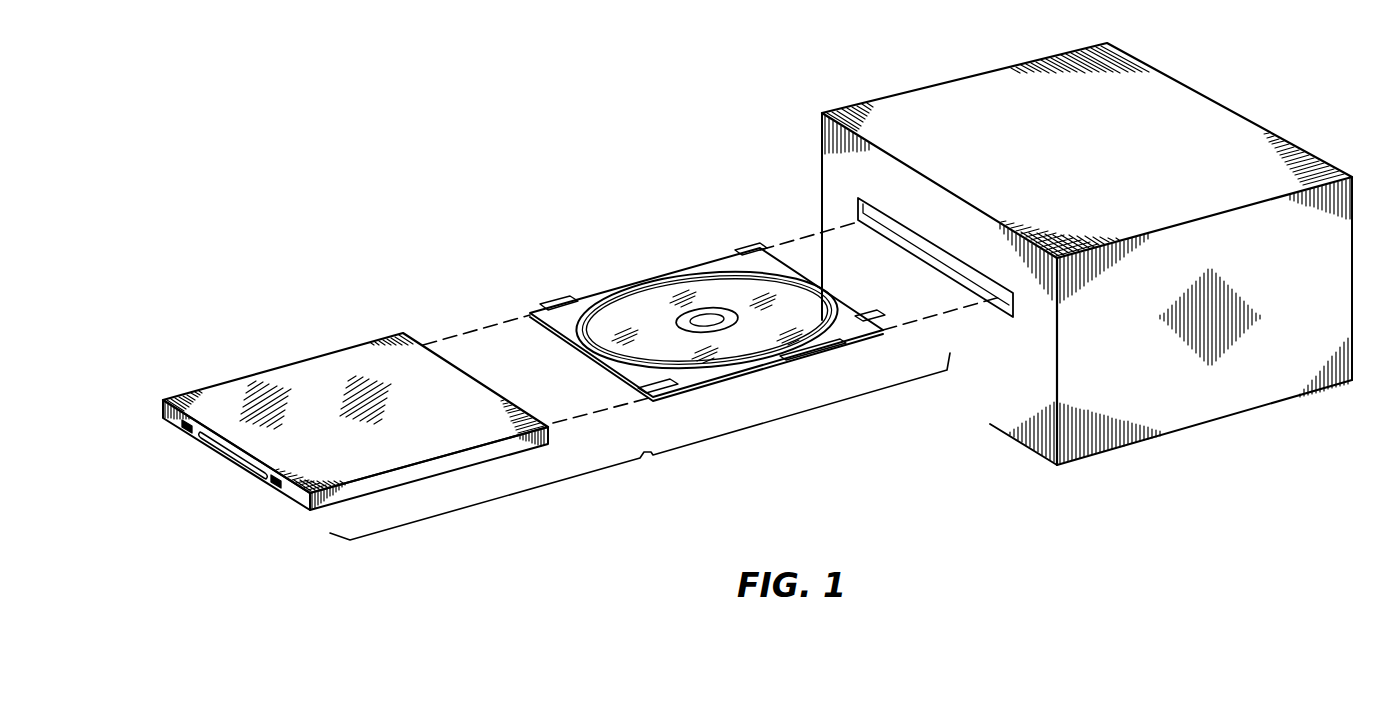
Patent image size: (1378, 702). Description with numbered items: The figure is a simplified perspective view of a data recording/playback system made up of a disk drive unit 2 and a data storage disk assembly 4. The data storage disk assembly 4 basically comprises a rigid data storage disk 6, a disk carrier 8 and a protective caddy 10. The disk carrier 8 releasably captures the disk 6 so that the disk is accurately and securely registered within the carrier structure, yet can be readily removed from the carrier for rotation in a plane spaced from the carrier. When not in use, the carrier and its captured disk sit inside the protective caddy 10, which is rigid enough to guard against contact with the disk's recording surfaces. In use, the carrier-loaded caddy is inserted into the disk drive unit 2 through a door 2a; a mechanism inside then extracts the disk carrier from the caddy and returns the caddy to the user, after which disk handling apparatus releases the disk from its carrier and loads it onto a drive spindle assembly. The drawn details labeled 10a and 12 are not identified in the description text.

The disk drive unit 2 is at (1020, 134).
The door 2a is at (999, 309).
The data storage disk assembly 4 is at (652, 456).
The data storage disk 6 is at (656, 321).
The disk carrier 8 is at (716, 390).
The protective caddy 10 is at (452, 423).
The case opening 10a is at (293, 494).
The cartridge rail 12 is at (816, 346).